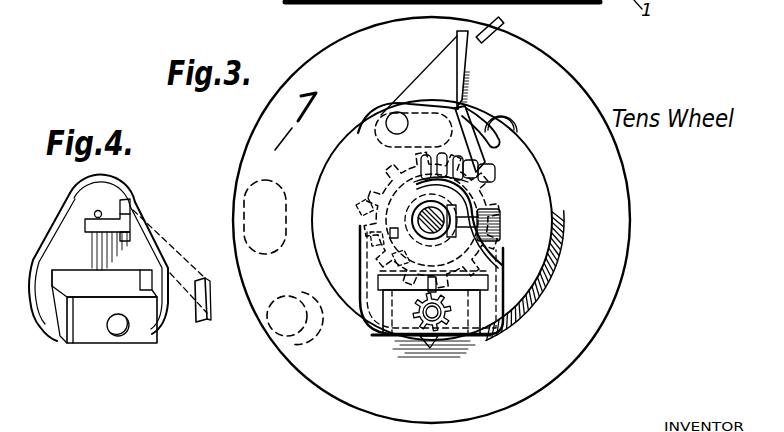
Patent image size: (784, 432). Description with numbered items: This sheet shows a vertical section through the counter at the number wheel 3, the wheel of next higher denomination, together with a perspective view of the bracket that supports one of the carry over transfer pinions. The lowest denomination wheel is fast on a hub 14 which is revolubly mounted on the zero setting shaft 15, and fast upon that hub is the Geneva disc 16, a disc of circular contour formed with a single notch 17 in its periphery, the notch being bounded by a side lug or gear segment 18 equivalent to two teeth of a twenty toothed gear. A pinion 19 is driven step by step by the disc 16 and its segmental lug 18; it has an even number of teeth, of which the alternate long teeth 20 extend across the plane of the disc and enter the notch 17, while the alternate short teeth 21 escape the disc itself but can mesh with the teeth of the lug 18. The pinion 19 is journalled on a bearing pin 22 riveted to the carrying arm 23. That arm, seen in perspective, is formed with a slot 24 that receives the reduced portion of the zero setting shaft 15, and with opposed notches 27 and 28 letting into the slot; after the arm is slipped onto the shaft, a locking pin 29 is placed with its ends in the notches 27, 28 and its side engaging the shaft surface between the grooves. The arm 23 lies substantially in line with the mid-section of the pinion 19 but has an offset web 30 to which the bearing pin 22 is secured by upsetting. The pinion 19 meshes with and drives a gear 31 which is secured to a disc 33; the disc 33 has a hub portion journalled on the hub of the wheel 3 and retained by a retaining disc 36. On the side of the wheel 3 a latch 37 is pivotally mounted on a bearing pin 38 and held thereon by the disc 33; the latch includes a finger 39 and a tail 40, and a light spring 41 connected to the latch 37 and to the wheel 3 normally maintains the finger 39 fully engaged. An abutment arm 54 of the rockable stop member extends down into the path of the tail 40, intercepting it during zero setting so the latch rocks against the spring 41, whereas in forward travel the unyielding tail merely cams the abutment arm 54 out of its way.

In FIG. 3, the number wheel 3 is at (262, 136).
In FIG. 3, the hub 14 is at (383, 206).
In FIG. 3, the zero setting shaft 15 is at (437, 230).
In FIG. 3, the Geneva disc 16 is at (408, 171).
In FIG. 3, the notch 17 is at (392, 233).
In FIG. 3, the gear segment 18 is at (400, 231).
In FIG. 3, the pinion 19 is at (421, 352).
In FIG. 3, the long teeth 20 is at (425, 284).
In FIG. 3, the short teeth 21 is at (398, 330).
In FIG. 3, the bearing pin 22 is at (437, 326).
In FIG. 3, the carrying arm 23 is at (367, 292).
In FIG. 4, the carrying arm 23 is at (56, 236).
In FIG. 4, the slot 24 is at (98, 213).
In FIG. 4, the notch 27 is at (124, 202).
In FIG. 4, the notch 28 is at (128, 232).
In FIG. 3, the locking pin 29 is at (500, 212).
In FIG. 4, the locking pin 29 is at (204, 322).
In FIG. 3, the offset web 30 is at (412, 337).
In FIG. 4, the offset web 30 is at (100, 342).
In FIG. 3, the gear 31 is at (467, 162).
In FIG. 3, the disc 33 is at (539, 168).
In FIG. 3, the retaining disc 36 is at (500, 226).
In FIG. 3, the latch 37 is at (422, 87).
In FIG. 3, the bearing pin 38 is at (410, 121).
In FIG. 3, the finger 39 is at (494, 161).
In FIG. 3, the tail 40 is at (453, 35).
In FIG. 3, the spring 41 is at (516, 128).
In FIG. 3, the abutment arm 54 is at (508, 24).